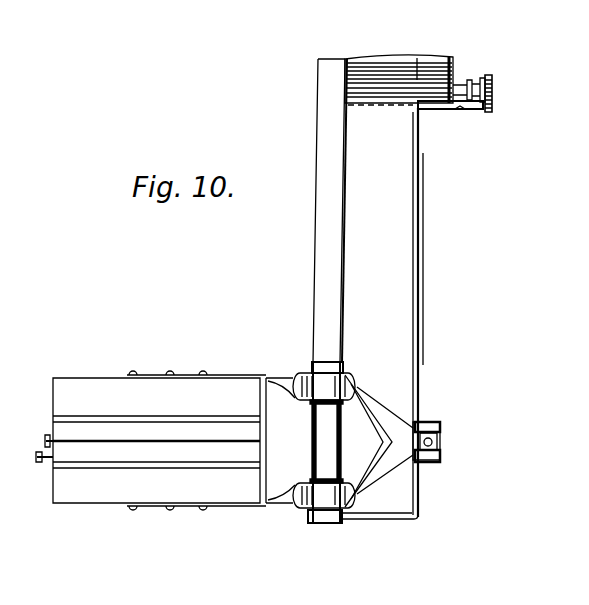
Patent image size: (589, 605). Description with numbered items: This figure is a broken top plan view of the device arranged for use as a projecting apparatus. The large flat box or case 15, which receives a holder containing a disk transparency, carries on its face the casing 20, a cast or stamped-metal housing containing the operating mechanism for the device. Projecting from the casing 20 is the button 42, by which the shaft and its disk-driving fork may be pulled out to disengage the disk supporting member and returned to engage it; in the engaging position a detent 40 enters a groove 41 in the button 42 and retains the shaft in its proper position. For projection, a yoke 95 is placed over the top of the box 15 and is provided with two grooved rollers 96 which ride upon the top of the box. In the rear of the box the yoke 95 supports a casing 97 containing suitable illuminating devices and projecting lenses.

The casing 20 is at (437, 66).
The groove 41 is at (475, 76).
The button 42 is at (493, 83).
The detent 40 is at (456, 109).
The yoke 95 is at (368, 410).
The grooved rollers 96 is at (322, 482).
The casing 97 is at (130, 482).
The box or case 15 is at (318, 523).